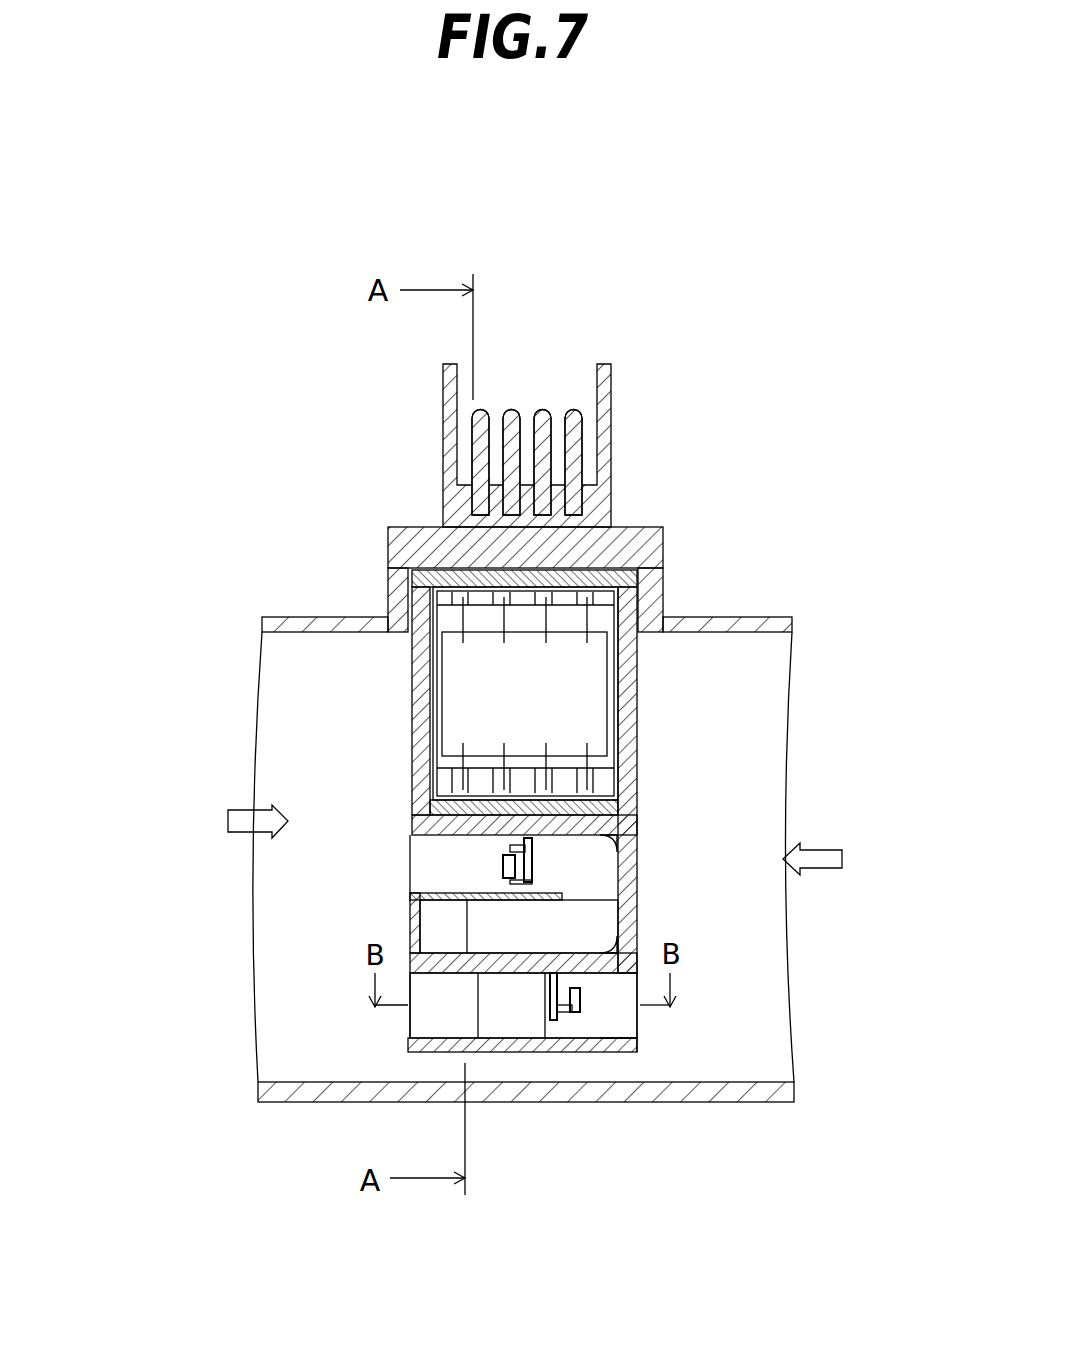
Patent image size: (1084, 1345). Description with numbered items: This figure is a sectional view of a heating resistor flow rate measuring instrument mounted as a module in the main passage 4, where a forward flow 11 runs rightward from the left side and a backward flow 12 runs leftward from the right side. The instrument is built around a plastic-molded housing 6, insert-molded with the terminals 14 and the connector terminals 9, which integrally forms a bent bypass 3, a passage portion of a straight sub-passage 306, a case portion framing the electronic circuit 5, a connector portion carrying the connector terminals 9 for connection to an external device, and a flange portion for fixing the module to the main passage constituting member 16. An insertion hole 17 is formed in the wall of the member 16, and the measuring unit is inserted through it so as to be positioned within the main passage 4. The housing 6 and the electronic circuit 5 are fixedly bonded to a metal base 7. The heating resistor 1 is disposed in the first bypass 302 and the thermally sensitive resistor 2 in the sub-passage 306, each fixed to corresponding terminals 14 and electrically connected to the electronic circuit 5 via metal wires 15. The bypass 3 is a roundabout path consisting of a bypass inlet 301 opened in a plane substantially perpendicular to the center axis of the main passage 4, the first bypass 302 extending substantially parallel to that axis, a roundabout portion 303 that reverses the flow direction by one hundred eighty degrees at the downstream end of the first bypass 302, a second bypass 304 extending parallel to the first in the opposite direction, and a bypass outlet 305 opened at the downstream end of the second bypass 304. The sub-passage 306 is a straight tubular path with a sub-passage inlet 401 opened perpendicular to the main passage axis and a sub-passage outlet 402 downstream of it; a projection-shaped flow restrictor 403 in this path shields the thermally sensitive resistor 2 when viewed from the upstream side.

The heating resistor 1 is at (433, 860).
The thermally sensitive resistor 2 is at (585, 1013).
The bypass 3 is at (597, 858).
The main passage 4 is at (273, 1023).
The electronic circuit 5 is at (465, 655).
The housing 6 is at (632, 822).
The metal base 7 is at (613, 682).
The connector terminals 9 is at (583, 435).
The forward flow 11 is at (228, 820).
The backward flow 12 is at (842, 859).
The terminals 14 is at (532, 857).
The metal wires 15 is at (592, 612).
The main passage constituting member 16 is at (706, 618).
The insertion hole 17 is at (645, 615).
The bypass inlet 301 is at (410, 847).
The first bypass 302 is at (503, 863).
The roundabout portion 303 is at (603, 912).
The second bypass 304 is at (583, 937).
The bypass outlet 305 is at (437, 927).
The sub-passage 306 is at (408, 1055).
The sub-passage inlet 401 is at (430, 1015).
The sub-passage outlet 402 is at (638, 1030).
The flow restrictor 403 is at (498, 1013).